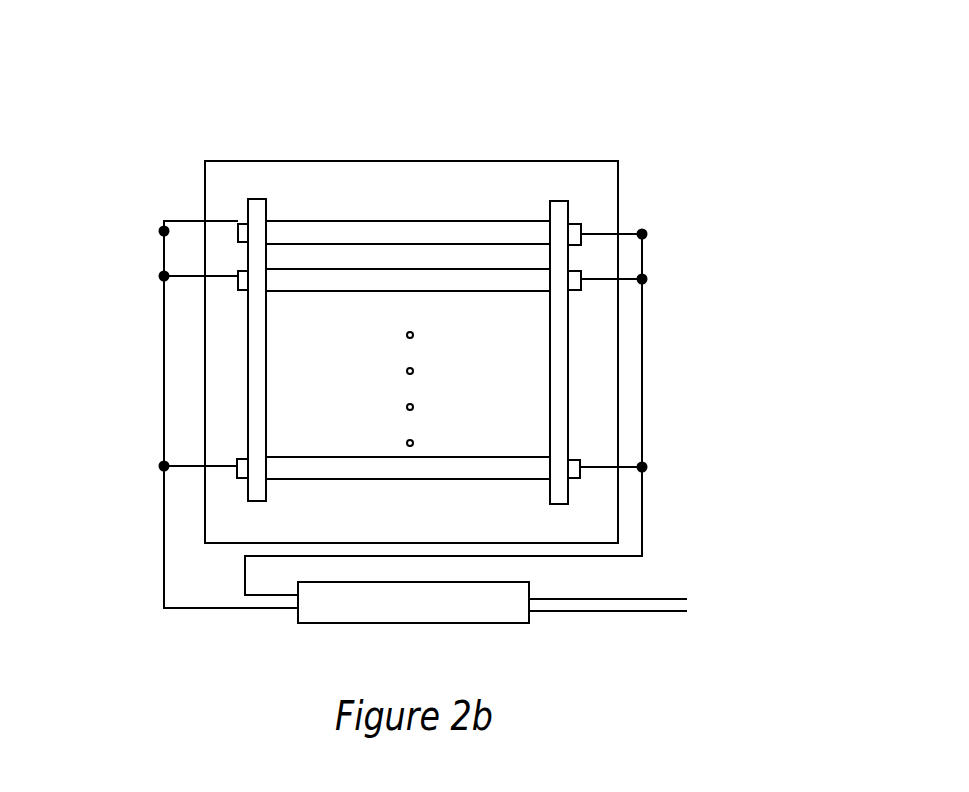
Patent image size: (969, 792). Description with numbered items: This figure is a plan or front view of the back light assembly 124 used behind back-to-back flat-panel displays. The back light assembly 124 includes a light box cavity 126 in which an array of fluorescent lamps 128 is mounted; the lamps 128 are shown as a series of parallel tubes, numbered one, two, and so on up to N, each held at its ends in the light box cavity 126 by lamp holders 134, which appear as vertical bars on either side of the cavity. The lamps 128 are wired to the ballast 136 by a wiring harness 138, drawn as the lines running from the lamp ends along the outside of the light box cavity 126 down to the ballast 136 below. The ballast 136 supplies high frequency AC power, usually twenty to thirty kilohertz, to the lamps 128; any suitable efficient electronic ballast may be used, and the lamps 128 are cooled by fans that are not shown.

The back light assembly 124 is at (423, 99).
The light box cavity 126 is at (504, 327).
The fluorescent lamps 128 is at (362, 269).
The lamp holders 134 is at (248, 337).
The ballast 136 is at (490, 623).
The wiring harness 138 is at (163, 427).